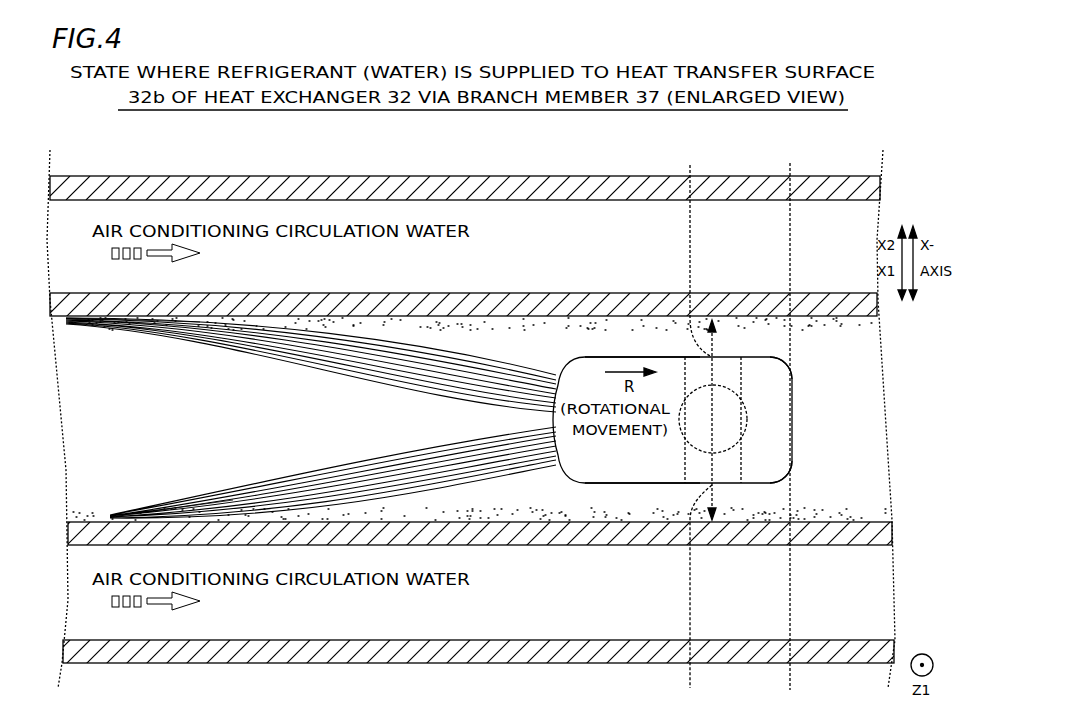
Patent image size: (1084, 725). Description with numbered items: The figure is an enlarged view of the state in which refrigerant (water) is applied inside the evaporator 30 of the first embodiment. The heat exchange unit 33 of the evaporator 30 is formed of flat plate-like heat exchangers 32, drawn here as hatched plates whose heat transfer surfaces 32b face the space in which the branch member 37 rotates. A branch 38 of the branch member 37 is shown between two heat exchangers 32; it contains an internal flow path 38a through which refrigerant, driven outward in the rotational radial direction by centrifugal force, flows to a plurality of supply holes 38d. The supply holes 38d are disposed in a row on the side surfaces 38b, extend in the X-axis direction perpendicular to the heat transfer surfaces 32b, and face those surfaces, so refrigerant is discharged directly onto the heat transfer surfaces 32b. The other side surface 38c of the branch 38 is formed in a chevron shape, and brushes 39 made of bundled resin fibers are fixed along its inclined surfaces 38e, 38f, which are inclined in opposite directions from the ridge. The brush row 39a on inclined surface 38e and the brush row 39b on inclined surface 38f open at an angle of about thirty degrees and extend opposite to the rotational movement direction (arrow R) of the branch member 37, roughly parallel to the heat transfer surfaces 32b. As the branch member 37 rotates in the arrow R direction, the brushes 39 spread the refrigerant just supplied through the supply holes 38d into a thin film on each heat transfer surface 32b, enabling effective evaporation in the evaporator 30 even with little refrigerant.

The evaporator 30 is at (851, 170).
The heat exchanger 32 is at (475, 429).
The heat exchange unit 33 is at (166, 178).
The heat transfer surface 32b is at (479, 429).
The branch member 37 is at (672, 420).
The branch 38 is at (703, 420).
The internal flow path 38a is at (737, 430).
The side surface 38b is at (751, 357).
The side surface 38c is at (315, 418).
The supply hole 38d is at (688, 352).
The inclined surface 38e is at (556, 374).
The inclined surface 38f is at (565, 470).
The brush 39 is at (149, 417).
The brush row 39a is at (149, 336).
The brush row 39b is at (149, 500).